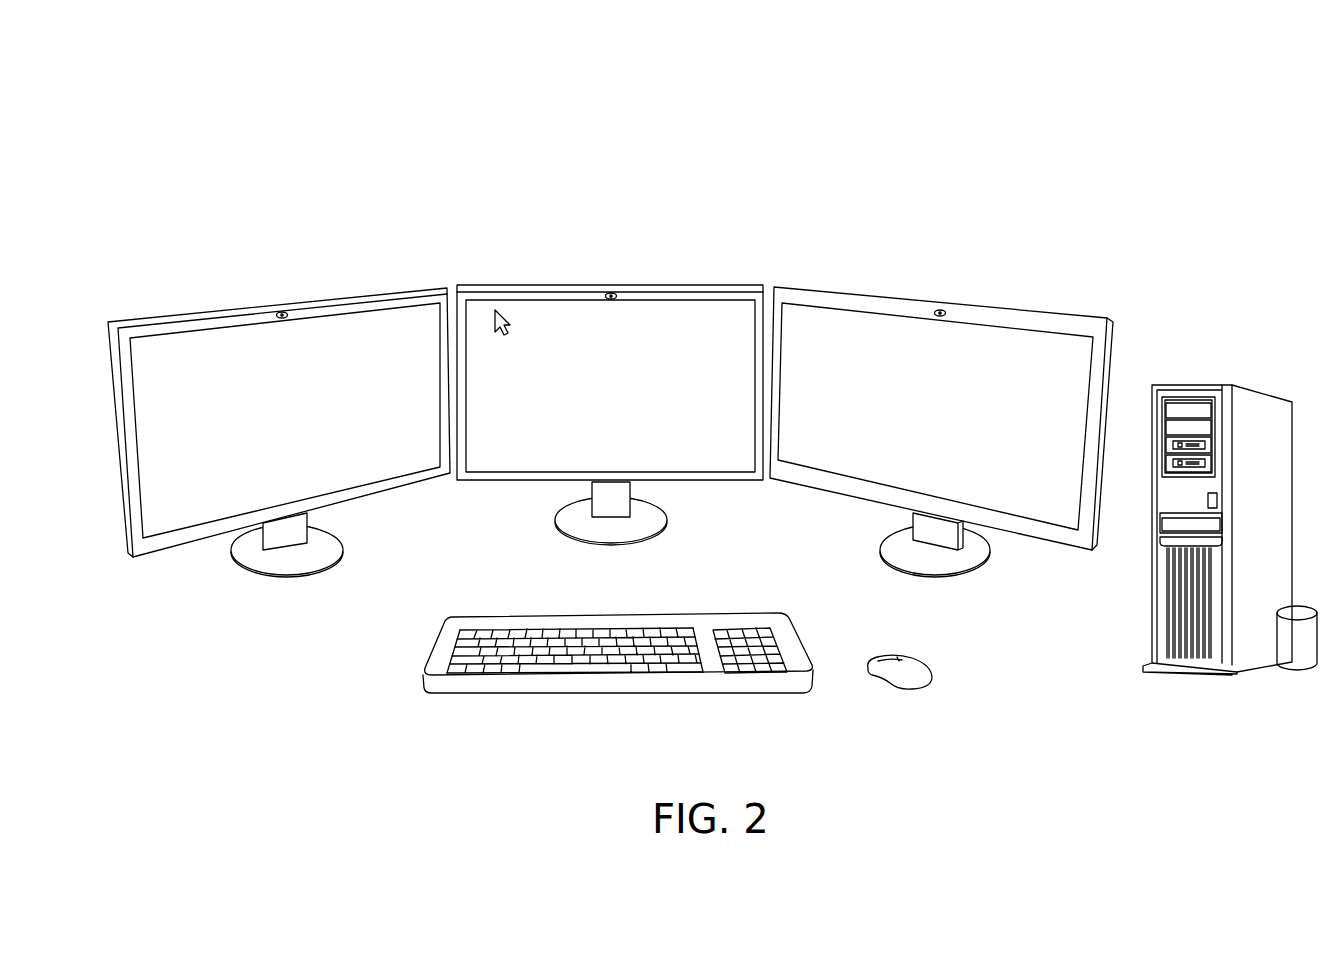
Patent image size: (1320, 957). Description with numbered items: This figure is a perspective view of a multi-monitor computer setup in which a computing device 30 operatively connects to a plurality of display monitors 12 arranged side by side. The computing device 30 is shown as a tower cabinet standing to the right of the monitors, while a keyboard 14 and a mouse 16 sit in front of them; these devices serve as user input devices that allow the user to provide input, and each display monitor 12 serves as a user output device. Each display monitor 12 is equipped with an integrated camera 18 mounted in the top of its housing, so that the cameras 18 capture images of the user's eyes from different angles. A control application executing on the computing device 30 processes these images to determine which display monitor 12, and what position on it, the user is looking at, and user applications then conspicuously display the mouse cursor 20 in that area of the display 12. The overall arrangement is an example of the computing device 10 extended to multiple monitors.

The computing device 10 is at (925, 153).
The display monitor 12 is at (165, 316).
The keyboard 14 is at (490, 623).
The mouse 16 is at (925, 657).
The camera 18 is at (288, 322).
The mouse cursor 20 is at (488, 304).
The computing device 30 is at (1258, 389).